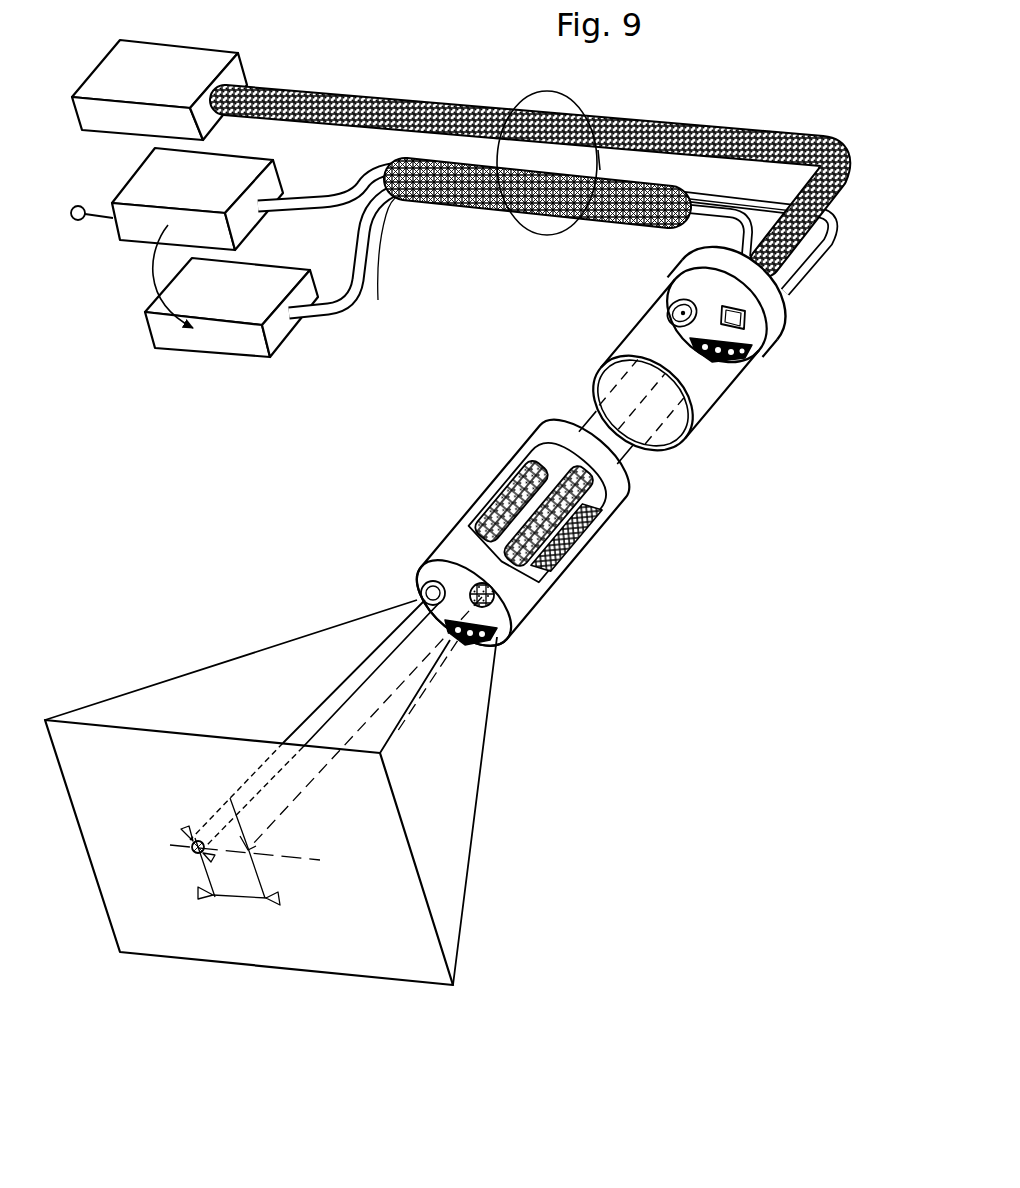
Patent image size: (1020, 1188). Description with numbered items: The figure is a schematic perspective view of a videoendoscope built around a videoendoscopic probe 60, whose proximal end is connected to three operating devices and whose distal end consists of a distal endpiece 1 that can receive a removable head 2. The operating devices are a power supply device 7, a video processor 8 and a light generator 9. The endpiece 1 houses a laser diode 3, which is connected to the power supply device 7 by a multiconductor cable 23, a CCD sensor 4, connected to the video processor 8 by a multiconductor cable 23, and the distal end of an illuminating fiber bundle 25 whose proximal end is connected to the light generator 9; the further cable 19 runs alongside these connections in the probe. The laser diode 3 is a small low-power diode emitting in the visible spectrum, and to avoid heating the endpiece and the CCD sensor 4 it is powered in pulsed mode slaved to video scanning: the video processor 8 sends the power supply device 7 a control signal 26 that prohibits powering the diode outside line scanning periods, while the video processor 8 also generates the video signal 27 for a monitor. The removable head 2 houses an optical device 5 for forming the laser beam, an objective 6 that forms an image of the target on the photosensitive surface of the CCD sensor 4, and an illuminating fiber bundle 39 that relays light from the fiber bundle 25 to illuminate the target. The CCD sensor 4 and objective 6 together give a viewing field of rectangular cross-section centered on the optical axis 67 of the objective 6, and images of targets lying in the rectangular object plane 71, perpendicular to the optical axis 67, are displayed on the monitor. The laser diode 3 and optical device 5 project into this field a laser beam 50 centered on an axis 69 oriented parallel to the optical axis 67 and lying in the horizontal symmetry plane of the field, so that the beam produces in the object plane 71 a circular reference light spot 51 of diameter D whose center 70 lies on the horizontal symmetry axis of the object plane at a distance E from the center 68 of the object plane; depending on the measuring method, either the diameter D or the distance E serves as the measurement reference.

The distal endpiece 1 is at (675, 349).
The removable head 2 is at (538, 533).
The laser diode 3 is at (672, 310).
The CCD sensor 4 is at (756, 322).
The optical device 5 is at (520, 488).
The objective 6 is at (533, 548).
The power supply device 7 is at (180, 350).
The video processor 8 is at (113, 208).
The light generator 9 is at (83, 113).
The cable 19 is at (362, 256).
The multiconductor cable 23 is at (352, 164).
The illuminating fiber bundle 25 is at (815, 189).
The control signal 26 is at (153, 300).
The video signal 27 is at (78, 222).
The illuminating fiber bundle 39 is at (567, 560).
The laser beam 50 is at (352, 650).
The reference light spot 51 is at (194, 856).
The videoendoscopic probe 60 is at (528, 231).
The optical axis 67 is at (388, 707).
The center of the object plane 68 is at (266, 844).
The axis 69 is at (318, 711).
The center of the light spot 70 is at (118, 740).
The object plane 71 is at (247, 840).